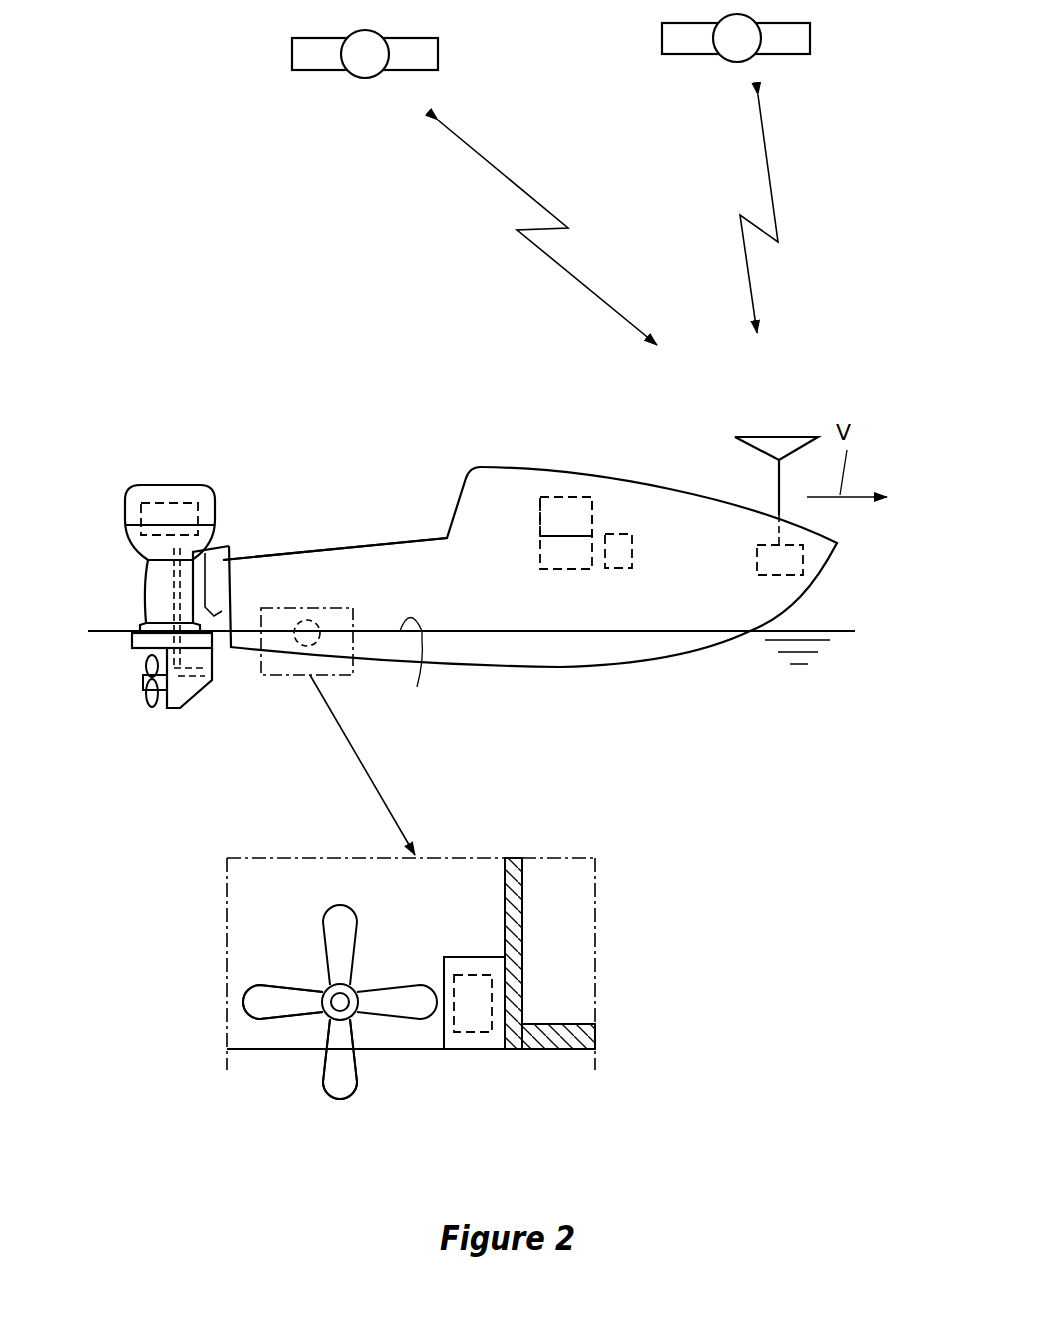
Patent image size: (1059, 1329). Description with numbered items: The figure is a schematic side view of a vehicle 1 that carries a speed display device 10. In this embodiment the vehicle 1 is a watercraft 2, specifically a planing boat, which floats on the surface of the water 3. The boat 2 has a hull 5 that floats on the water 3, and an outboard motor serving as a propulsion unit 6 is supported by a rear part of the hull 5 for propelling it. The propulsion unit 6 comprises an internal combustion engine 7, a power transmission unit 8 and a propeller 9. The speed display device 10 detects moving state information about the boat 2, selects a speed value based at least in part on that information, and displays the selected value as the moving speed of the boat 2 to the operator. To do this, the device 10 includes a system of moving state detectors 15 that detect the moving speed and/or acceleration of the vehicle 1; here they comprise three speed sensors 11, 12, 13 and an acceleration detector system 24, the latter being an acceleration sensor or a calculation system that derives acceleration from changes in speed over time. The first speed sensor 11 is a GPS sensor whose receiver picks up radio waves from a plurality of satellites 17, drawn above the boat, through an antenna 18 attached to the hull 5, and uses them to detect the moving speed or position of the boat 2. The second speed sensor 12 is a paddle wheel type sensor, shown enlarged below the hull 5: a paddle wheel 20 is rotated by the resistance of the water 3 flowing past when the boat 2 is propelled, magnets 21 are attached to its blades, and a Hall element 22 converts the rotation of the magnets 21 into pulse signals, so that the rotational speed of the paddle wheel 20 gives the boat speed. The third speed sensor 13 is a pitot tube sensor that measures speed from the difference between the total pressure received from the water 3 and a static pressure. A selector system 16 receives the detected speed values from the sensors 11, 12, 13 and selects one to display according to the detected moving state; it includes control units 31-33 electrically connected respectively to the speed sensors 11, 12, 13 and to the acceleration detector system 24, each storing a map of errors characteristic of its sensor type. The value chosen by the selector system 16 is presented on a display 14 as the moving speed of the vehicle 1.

The vehicle 1 is at (410, 430).
The watercraft 2 is at (651, 480).
The water 3 is at (411, 669).
The hull 5 is at (377, 563).
The propulsion unit 6 is at (155, 483).
The internal combustion engine 7 is at (178, 503).
The power transmission unit 8 is at (155, 593).
The propeller 9 is at (150, 700).
The speed display device 10 is at (575, 488).
The first speed sensor 11 is at (755, 553).
The second speed sensor 12 is at (270, 948).
The third speed sensor 13 is at (180, 676).
The display 14 is at (541, 496).
The moving state detectors 15 is at (805, 562).
The selector system 16 is at (568, 575).
The satellite 17 is at (316, 72).
The antenna 18 is at (757, 437).
The paddle wheel 20 is at (243, 1000).
The magnets 21 is at (355, 1085).
The Hall element 22 is at (478, 1032).
The acceleration detector system 24 is at (615, 568).
The control units 31-33 is at (552, 572).